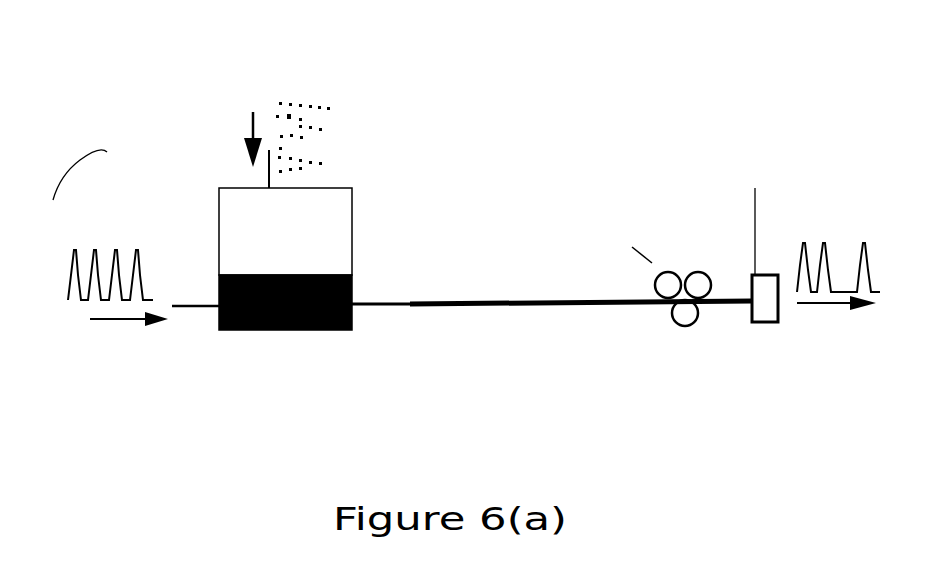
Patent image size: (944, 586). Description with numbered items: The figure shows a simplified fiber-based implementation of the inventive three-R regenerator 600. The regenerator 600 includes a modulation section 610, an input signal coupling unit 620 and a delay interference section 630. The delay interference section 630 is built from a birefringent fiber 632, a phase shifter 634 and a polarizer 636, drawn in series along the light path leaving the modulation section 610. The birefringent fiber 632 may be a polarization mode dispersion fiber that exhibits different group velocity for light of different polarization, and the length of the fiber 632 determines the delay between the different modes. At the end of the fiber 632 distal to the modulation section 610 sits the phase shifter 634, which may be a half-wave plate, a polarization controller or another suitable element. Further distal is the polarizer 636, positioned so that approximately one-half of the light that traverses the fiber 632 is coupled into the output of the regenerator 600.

The regenerator 600 is at (786, 70).
The modulation section 610 is at (352, 330).
The coupling unit 620 is at (352, 224).
The delay interference section 630 is at (692, 162).
The birefringent fiber 632 is at (513, 308).
The phase shifter 634 is at (667, 330).
The polarizer 636 is at (752, 333).